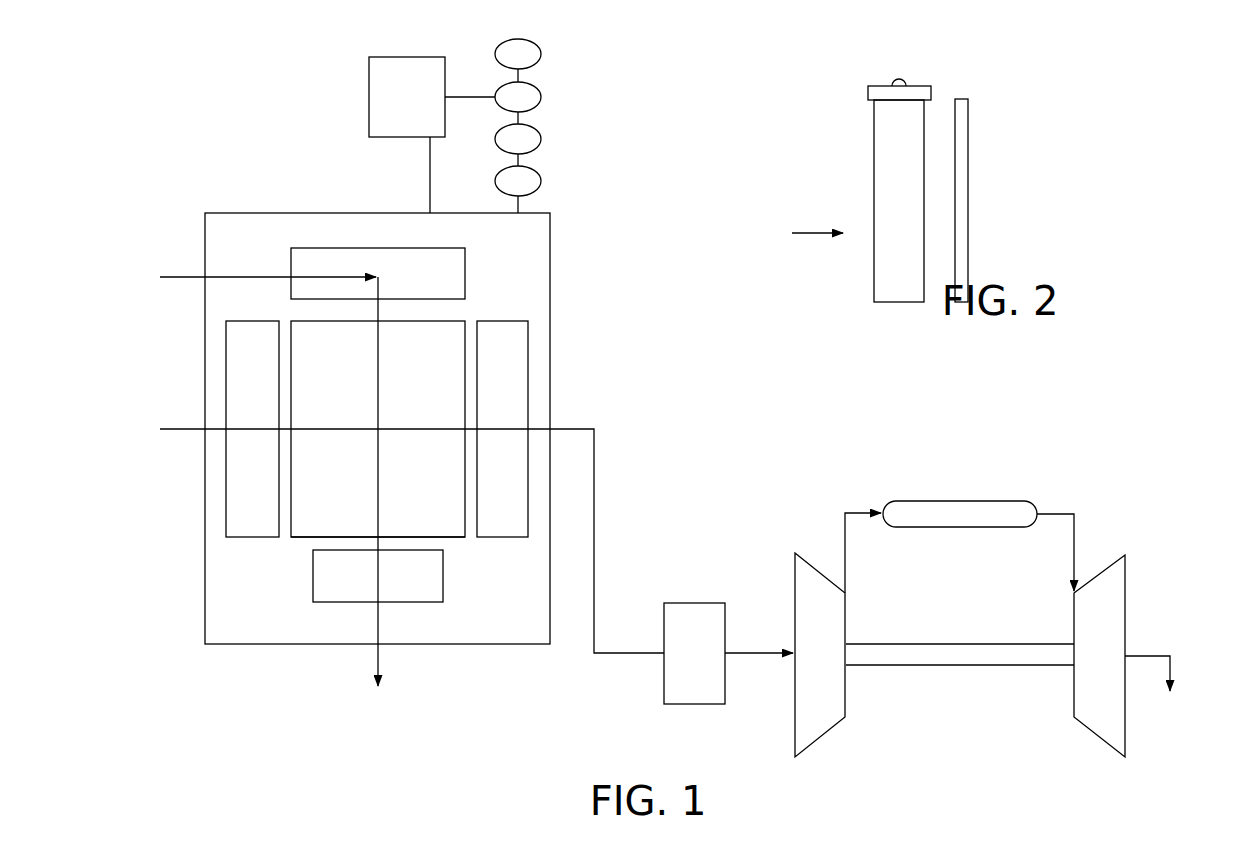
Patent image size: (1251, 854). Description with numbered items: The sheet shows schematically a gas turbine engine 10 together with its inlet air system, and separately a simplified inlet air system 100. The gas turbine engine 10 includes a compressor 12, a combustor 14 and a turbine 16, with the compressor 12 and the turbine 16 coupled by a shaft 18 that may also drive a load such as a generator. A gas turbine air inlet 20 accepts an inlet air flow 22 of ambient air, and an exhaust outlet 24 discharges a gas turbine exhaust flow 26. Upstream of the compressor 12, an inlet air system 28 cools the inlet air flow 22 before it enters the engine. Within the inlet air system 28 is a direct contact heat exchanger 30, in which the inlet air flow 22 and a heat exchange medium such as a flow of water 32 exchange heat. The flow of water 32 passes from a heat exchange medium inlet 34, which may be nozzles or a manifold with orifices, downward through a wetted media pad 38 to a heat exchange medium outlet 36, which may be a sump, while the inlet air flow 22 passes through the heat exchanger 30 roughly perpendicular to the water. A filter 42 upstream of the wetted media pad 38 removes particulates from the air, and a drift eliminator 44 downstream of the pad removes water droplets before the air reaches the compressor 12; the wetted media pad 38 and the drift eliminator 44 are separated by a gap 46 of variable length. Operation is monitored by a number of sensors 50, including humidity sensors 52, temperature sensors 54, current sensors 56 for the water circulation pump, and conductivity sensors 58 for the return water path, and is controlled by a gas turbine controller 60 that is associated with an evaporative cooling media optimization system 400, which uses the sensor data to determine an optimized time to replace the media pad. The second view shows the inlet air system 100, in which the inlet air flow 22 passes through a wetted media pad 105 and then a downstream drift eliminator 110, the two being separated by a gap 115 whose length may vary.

In FIG. 1, the gas turbine engine 10 is at (1106, 451).
In FIG. 1, the compressor 12 is at (795, 577).
In FIG. 1, the combustor 14 is at (947, 501).
In FIG. 1, the turbine 16 is at (1125, 595).
In FIG. 1, the shaft 18 is at (922, 665).
In FIG. 1, the gas turbine air inlet 20 is at (695, 704).
In FIG. 1, the inlet air flow 22 is at (594, 450).
In FIG. 2, the inlet air flow 22 is at (816, 233).
In FIG. 1, the exhaust outlet 24 is at (1153, 636).
In FIG. 1, the gas turbine exhaust flow 26 is at (1172, 683).
In FIG. 1, the inlet air system 28 is at (585, 230).
In FIG. 1, the heat exchanger 30 is at (465, 313).
In FIG. 1, the flow of water 32 is at (247, 277).
In FIG. 1, the heat exchange medium inlet 34 is at (418, 248).
In FIG. 1, the heat exchange medium outlet 36 is at (407, 602).
In FIG. 1, the wetted media pad 38 is at (308, 537).
In FIG. 1, the filter 42 is at (226, 493).
In FIG. 1, the drift eliminator 44 is at (522, 340).
In FIG. 1, the gap 46 is at (470, 528).
In FIG. 1, the sensors 50 is at (546, 112).
In FIG. 1, the humidity sensors 52 is at (540, 53).
In FIG. 1, the temperature sensors 54 is at (540, 96).
In FIG. 1, the current sensors 56 is at (540, 138).
In FIG. 1, the conductivity sensors 58 is at (540, 180).
In FIG. 1, the gas turbine controller 60 is at (407, 97).
In FIG. 1, the evaporative cooling media optimization system 400 is at (379, 78).
In FIG. 2, the inlet air system 100 is at (822, 65).
In FIG. 2, the wetted media pad 105 is at (874, 173).
In FIG. 2, the drift eliminator 110 is at (968, 173).
In FIG. 2, the gap 115 is at (940, 105).